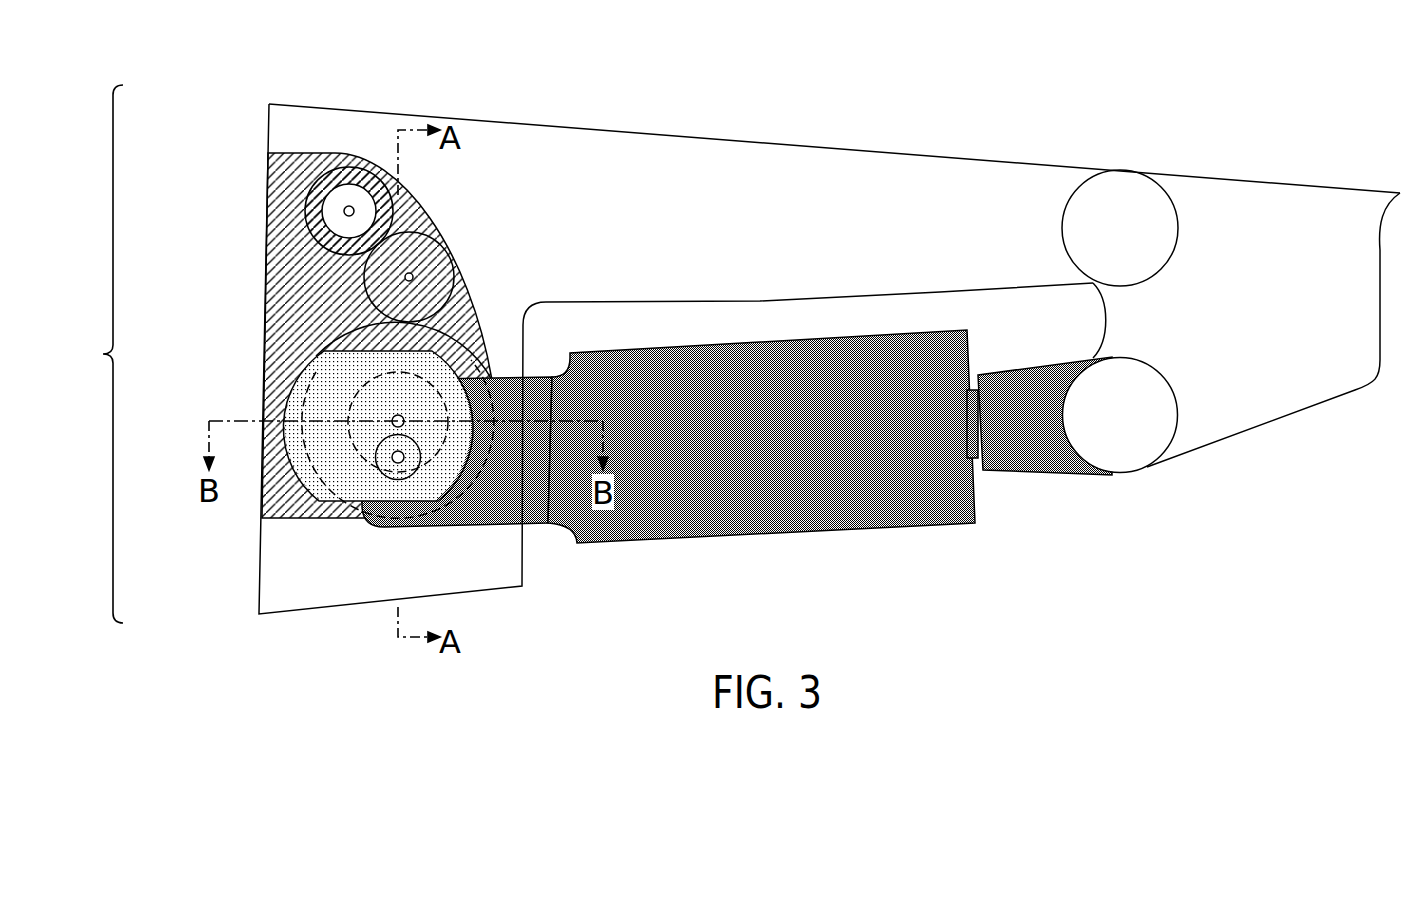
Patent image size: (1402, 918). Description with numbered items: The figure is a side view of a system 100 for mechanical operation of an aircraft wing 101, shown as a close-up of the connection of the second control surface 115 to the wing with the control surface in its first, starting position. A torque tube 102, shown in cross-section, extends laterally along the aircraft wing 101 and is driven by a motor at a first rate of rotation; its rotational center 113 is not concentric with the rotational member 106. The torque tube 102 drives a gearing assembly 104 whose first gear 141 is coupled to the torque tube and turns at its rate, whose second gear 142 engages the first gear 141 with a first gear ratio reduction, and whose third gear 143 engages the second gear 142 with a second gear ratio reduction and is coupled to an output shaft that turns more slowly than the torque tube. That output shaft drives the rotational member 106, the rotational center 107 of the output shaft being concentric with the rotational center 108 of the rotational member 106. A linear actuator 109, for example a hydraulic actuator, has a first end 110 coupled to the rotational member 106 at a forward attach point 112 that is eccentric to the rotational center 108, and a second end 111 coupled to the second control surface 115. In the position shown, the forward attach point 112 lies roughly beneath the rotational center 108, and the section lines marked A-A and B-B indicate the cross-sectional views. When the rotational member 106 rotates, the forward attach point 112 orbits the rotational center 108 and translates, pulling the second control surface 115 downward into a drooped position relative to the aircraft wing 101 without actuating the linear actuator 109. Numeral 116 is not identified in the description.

The system 100 is at (95, 354).
The aircraft wing 101 is at (925, 153).
The torque tube 102 is at (363, 187).
The gearing assembly 104 is at (427, 203).
The rotational member 106 is at (290, 395).
The rotational center of the output shaft 107 is at (308, 352).
The rotational center of the rotational member 108 is at (393, 416).
The linear actuator 109 is at (652, 543).
The first end 110 is at (380, 528).
The second end 111 is at (1125, 473).
The forward attach point 112 is at (410, 470).
The rotational center of the torque tube 113 is at (322, 200).
The second control surface 115 is at (1262, 180).
The locking bolt 116 is at (400, 463).
The first gear 141 is at (313, 224).
The second gear 142 is at (450, 247).
The third gear 143 is at (479, 325).